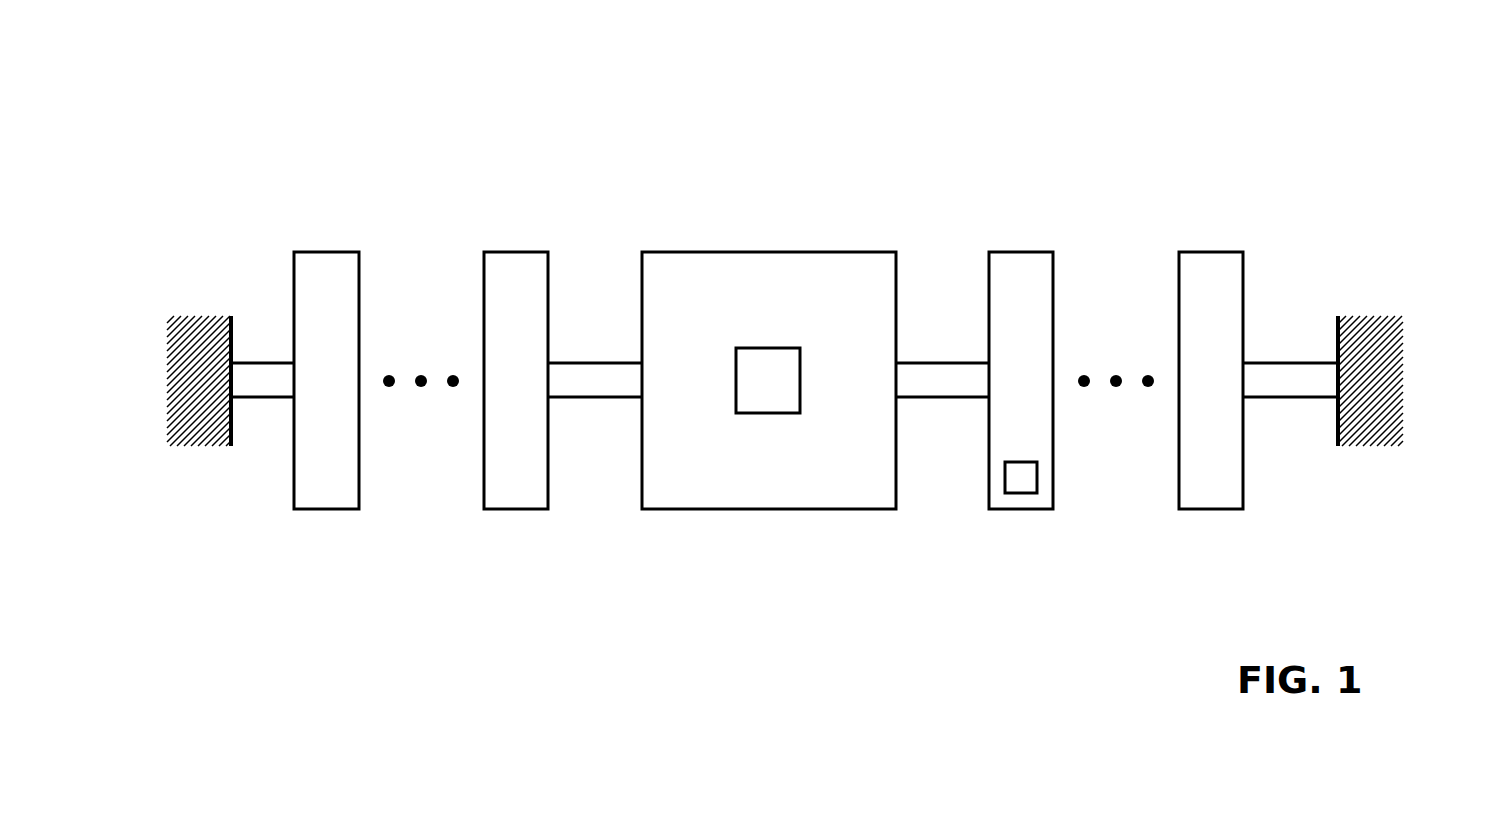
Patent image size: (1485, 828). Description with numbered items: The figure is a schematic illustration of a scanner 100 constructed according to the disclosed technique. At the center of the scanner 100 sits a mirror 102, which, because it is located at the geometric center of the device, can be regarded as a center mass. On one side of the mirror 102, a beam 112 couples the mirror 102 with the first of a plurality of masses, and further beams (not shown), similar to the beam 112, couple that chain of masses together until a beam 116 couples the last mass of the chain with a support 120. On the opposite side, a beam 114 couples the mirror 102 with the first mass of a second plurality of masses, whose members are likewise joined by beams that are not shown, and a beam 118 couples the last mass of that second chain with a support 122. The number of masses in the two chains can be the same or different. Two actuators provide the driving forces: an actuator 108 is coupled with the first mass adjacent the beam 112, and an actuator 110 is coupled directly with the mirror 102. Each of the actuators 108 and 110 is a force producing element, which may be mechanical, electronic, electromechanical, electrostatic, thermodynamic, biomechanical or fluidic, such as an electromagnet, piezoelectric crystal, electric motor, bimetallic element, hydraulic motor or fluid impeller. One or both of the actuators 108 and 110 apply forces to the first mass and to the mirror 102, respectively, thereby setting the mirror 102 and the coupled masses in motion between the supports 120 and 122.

The scanner 100 is at (805, 106).
The mirror 102 is at (830, 252).
The actuator 108 is at (1020, 493).
The actuator 110 is at (774, 413).
The beam 112 is at (912, 362).
The beam 114 is at (560, 362).
The beam 116 is at (1277, 362).
The beam 118 is at (252, 363).
The support 120 is at (1378, 316).
The support 122 is at (196, 316).